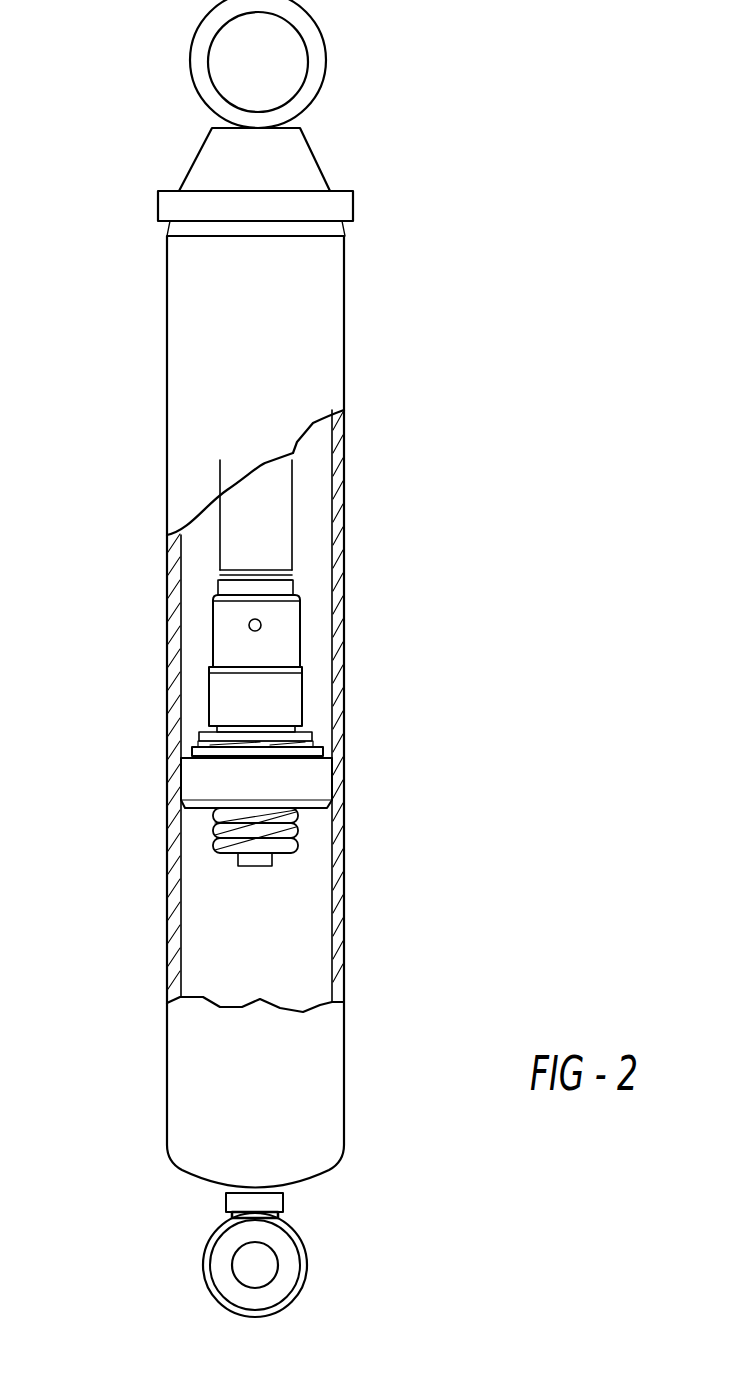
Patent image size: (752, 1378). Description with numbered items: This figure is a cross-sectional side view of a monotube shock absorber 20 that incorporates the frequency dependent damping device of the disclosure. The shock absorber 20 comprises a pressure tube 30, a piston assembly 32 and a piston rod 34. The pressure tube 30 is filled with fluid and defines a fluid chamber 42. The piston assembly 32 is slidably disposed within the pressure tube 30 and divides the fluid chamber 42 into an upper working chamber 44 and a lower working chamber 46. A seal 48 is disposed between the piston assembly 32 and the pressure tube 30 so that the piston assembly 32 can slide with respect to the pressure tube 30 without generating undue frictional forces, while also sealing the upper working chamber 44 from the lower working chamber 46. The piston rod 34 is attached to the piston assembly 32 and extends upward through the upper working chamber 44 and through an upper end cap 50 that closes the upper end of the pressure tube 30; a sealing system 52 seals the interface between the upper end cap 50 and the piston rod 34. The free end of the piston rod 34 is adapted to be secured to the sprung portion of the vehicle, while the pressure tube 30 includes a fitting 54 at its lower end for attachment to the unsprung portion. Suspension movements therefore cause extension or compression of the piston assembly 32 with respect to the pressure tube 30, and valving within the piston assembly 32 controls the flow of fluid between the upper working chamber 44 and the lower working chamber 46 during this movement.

The shock absorber 20 is at (303, 658).
The pressure tube 30 is at (344, 675).
The piston assembly 32 is at (302, 779).
The piston rod 34 is at (262, 553).
The fluid chamber 42 is at (238, 915).
The upper working chamber 44 is at (310, 500).
The lower working chamber 46 is at (288, 915).
The seal 48 is at (200, 776).
The upper end cap 50 is at (313, 150).
The sealing system 52 is at (157, 205).
The fitting 54 is at (203, 1257).